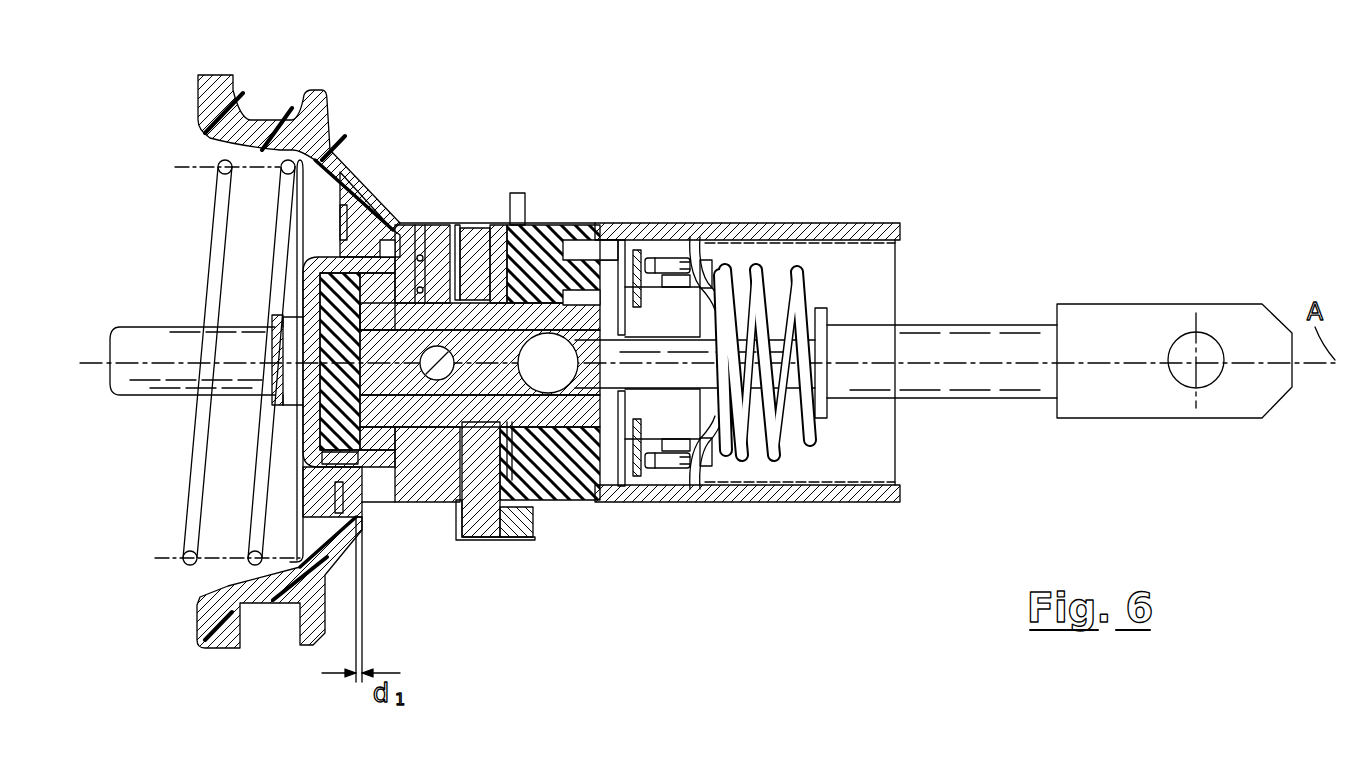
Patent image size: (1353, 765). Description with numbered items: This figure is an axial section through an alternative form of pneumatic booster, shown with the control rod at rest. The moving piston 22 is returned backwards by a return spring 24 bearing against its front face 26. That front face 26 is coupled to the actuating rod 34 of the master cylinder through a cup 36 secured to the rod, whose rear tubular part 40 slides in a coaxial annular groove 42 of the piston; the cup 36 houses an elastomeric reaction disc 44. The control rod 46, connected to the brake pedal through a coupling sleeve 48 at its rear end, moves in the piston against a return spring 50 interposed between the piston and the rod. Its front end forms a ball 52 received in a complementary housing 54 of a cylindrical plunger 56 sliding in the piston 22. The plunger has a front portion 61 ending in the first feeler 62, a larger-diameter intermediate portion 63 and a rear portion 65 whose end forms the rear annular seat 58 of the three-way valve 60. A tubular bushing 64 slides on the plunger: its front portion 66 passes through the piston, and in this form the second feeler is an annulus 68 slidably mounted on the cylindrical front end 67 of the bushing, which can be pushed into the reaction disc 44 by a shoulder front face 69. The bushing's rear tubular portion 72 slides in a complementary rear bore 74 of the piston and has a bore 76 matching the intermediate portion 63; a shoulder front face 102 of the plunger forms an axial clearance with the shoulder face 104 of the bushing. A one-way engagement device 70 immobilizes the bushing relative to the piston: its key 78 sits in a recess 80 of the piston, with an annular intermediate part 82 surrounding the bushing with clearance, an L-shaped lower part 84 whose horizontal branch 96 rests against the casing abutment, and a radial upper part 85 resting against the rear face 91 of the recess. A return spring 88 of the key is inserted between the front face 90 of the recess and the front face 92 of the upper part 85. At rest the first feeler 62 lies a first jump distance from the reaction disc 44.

The moving piston 22 is at (317, 142).
The return spring 24 is at (190, 558).
The front face 26 is at (340, 203).
The actuating rod 34 is at (125, 337).
The cup 36 is at (310, 450).
The rear tubular part 40 is at (315, 458).
The coaxial annular groove 42 is at (336, 510).
The reaction disc 44 is at (305, 422).
The control rod 46 is at (983, 325).
The coupling sleeve 48 is at (1130, 320).
The return spring 50 is at (758, 277).
The ball 52 is at (590, 347).
The complementary housing 54 is at (612, 338).
The plunger 56 is at (512, 470).
The rear annular seat 58 is at (603, 478).
The three-way valve 60 is at (635, 478).
The front portion 61 is at (322, 372).
The first feeler 62 is at (310, 360).
The intermediate portion 63 is at (565, 430).
The tubular bushing 64 is at (395, 212).
The rear portion 65 is at (630, 245).
The front portion 66 is at (432, 280).
The cylindrical front end 67 is at (338, 290).
The second feeler 68 is at (322, 268).
The shoulder front face 69 is at (362, 525).
The one-way engagement device 70 is at (487, 215).
The rear tubular portion 72 is at (568, 305).
The rear bore 74 is at (548, 300).
The bore 76 is at (597, 397).
The key 78 is at (512, 195).
The recess 80 is at (507, 537).
The annular intermediate part 82 is at (553, 342).
The lower part 84 is at (447, 525).
The upper part 85 is at (470, 230).
The return spring 88 is at (407, 235).
The front face 90 is at (392, 250).
The rear face 91 is at (528, 285).
The front face 92 is at (458, 225).
The horizontal branch 96 is at (522, 540).
The shoulder front face 102 is at (608, 250).
The shoulder face 104 is at (590, 300).